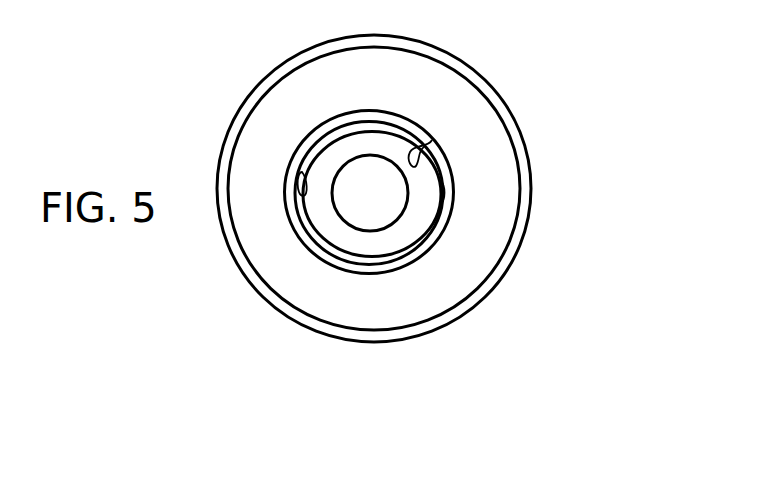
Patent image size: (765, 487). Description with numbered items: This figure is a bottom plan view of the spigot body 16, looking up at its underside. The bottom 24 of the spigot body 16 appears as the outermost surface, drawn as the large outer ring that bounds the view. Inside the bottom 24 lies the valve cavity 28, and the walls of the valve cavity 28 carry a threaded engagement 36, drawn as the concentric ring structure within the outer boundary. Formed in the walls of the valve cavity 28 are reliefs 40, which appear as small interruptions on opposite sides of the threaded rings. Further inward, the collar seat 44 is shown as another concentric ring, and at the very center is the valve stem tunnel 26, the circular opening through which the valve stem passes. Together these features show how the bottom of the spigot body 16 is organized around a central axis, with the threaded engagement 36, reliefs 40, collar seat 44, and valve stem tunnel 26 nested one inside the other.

The spigot body 16 is at (579, 124).
The bottom 24 is at (522, 210).
The valve stem tunnel 26 is at (386, 205).
The valve cavity 28 is at (432, 140).
The threaded engagement 36 is at (450, 168).
The reliefs 40 is at (292, 216).
The collar seat 44 is at (365, 240).